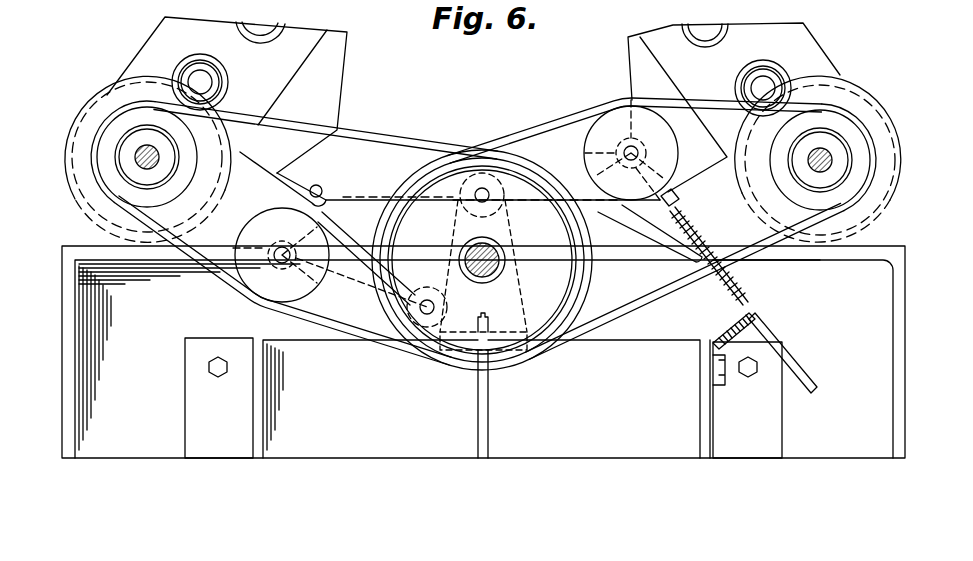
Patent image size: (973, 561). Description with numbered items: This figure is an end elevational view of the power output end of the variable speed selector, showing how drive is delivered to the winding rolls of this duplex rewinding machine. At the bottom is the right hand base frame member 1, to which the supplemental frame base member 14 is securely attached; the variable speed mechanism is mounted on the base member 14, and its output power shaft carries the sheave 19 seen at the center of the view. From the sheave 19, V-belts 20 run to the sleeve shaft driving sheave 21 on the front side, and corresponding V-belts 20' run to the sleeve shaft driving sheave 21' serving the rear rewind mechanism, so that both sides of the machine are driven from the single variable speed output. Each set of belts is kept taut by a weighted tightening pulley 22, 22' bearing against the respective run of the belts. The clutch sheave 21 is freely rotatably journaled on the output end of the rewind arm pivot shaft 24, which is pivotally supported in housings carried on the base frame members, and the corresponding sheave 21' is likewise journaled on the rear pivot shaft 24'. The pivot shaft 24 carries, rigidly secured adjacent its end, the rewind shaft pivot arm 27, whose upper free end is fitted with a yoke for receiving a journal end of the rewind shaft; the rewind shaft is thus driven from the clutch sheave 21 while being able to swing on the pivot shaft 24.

The base frame member 1 is at (905, 247).
The supplemental frame base member 14 is at (258, 418).
The sheave 19 is at (585, 262).
The V-belts 20 is at (294, 229).
The V-belts 20' is at (662, 223).
The sleeve shaft driving sheave 21 is at (126, 159).
The sleeve shaft driving sheave 21' is at (842, 159).
The weighted tightening pulley 22 is at (305, 260).
The weighted tightening pulley 22' is at (630, 135).
The rewind arm pivot shaft 24 is at (93, 131).
The rewind arm pivot shaft 24' is at (875, 135).
The rewind shaft pivot arm 27 is at (335, 78).